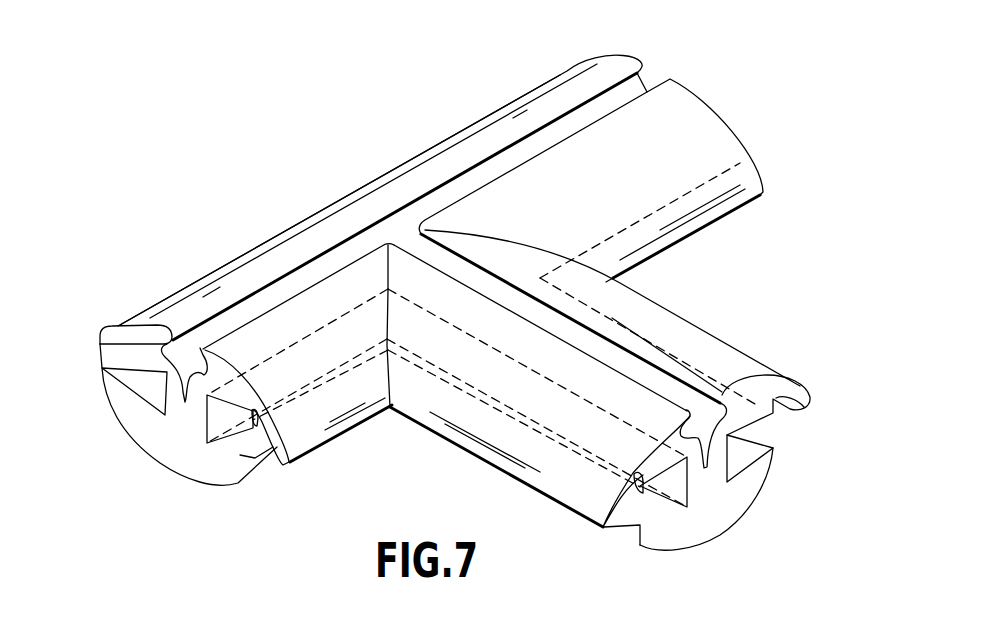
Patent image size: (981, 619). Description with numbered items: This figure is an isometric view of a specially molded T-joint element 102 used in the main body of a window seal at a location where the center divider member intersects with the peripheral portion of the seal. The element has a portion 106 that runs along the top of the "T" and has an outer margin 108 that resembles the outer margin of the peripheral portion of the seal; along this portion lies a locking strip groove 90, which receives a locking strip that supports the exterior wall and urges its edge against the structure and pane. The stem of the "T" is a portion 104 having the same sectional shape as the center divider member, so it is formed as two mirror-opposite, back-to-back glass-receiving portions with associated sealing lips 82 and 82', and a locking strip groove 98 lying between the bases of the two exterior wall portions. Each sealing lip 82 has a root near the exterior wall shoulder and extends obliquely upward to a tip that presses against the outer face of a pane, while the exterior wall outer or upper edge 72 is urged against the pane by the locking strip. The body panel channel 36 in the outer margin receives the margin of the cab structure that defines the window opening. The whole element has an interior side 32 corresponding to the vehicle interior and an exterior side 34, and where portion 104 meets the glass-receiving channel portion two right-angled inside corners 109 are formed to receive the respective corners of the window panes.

The interior side 32 is at (170, 460).
The exterior side 34 is at (687, 100).
The body panel channel 36 is at (143, 390).
The exterior wall outer or upper edge 72 is at (254, 428).
The sealing lip 82 is at (447, 459).
The sealing lip 82' is at (770, 404).
The locking strip groove 90 is at (563, 130).
The locking strip groove 98 is at (643, 373).
The T-joint element 102 is at (384, 171).
The portion 104 is at (753, 357).
The portion 106 is at (237, 260).
The outer margin 108 is at (100, 347).
The right-angled inside corners 109 is at (613, 278).